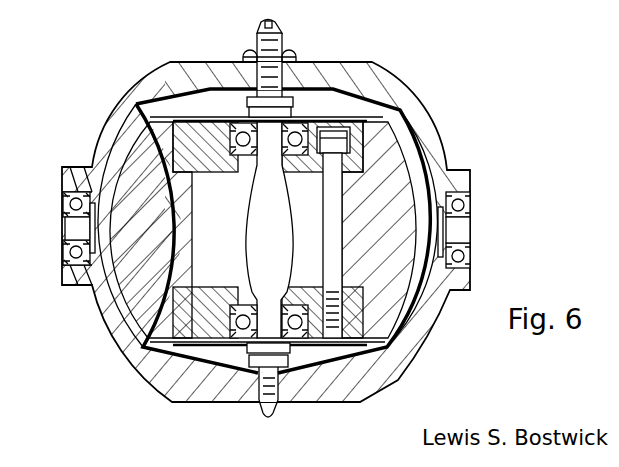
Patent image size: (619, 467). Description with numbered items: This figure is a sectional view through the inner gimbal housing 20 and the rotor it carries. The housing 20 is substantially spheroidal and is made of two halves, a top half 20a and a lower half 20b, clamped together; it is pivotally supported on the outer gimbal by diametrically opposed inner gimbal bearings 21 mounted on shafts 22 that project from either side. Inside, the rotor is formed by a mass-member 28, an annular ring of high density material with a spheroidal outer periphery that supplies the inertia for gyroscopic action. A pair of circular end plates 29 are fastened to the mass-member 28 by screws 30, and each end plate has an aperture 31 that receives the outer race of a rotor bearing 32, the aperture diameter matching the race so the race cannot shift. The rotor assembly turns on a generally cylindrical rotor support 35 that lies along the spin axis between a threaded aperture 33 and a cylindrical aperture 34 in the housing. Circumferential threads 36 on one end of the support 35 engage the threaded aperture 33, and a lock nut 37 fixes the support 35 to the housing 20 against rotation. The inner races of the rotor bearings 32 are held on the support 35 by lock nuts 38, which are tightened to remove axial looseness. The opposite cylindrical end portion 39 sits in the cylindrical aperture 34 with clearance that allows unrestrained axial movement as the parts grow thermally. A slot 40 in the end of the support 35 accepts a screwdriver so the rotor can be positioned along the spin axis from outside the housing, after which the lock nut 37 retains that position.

The inner gimbal housing 20 is at (412, 100).
The top half of inner gimbal 20a is at (68, 177).
The trunnion boss lower portion 20b is at (80, 287).
The inner gimbal bearings 21 is at (62, 208).
The shafts 22 is at (63, 242).
The mass-member 28 is at (417, 302).
The circular end plates 29 is at (150, 100).
The screws 30 is at (342, 208).
The apertures 31 is at (190, 95).
The rotor bearings 32 is at (232, 146).
The threaded aperture 33 is at (258, 83).
The cylindrical aperture 34 is at (258, 400).
The rotor support 35 is at (280, 207).
The circumferential threads 36 is at (296, 62).
The lock nut 37 is at (250, 52).
The lock nuts 38 is at (292, 100).
The cylindrical end portion 39 is at (267, 420).
The slot 40 is at (272, 28).